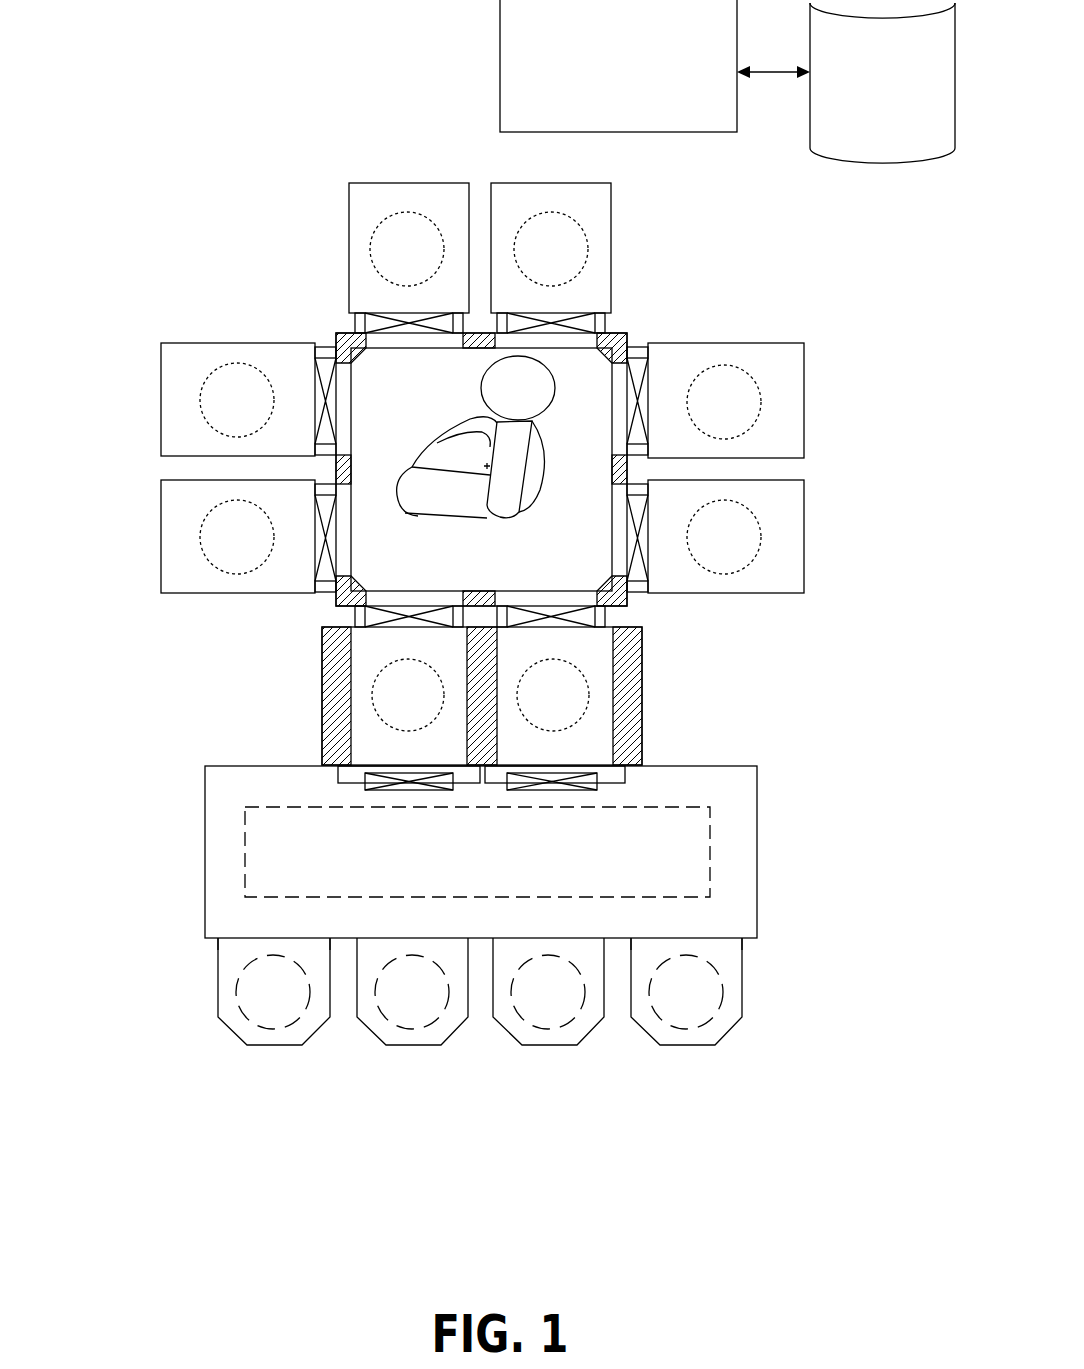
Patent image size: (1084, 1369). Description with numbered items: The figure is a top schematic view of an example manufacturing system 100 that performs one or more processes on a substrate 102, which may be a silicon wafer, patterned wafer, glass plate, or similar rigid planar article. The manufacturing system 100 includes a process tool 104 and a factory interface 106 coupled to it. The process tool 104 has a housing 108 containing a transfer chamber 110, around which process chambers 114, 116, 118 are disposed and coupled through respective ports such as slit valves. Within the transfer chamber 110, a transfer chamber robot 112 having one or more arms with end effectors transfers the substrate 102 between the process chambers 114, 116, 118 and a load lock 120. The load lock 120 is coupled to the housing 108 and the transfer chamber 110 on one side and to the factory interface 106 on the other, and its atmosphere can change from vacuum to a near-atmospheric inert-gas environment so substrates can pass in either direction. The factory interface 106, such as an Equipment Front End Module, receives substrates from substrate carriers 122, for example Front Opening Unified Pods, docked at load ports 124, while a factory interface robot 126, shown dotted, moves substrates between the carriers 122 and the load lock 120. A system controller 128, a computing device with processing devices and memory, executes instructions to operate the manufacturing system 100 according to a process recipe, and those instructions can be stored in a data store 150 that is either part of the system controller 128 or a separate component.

The manufacturing system 100 is at (148, 40).
The substrate 102 is at (536, 399).
The process tool 104 is at (648, 312).
The factory interface 106 is at (190, 846).
The housing 108 is at (630, 606).
The transfer chamber 110 is at (502, 564).
The transfer chamber robot 112 is at (460, 410).
The process chamber 114 is at (715, 468).
The process chamber 116 is at (480, 258).
The process chamber 118 is at (248, 468).
The load lock 120 is at (306, 677).
The substrate carrier 122 is at (270, 1047).
The load port 124 is at (240, 942).
The factory interface robot 126 is at (712, 850).
The system controller 128 is at (600, 92).
The data store 150 is at (864, 101).